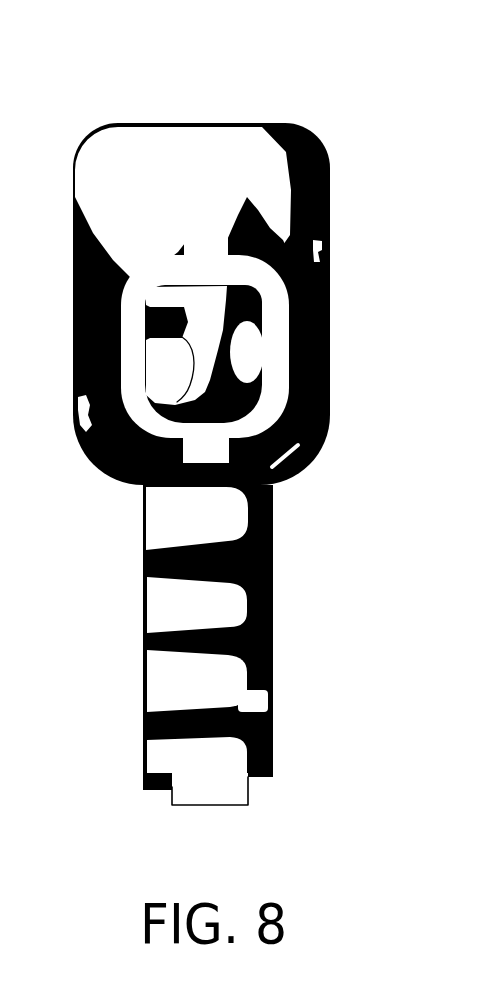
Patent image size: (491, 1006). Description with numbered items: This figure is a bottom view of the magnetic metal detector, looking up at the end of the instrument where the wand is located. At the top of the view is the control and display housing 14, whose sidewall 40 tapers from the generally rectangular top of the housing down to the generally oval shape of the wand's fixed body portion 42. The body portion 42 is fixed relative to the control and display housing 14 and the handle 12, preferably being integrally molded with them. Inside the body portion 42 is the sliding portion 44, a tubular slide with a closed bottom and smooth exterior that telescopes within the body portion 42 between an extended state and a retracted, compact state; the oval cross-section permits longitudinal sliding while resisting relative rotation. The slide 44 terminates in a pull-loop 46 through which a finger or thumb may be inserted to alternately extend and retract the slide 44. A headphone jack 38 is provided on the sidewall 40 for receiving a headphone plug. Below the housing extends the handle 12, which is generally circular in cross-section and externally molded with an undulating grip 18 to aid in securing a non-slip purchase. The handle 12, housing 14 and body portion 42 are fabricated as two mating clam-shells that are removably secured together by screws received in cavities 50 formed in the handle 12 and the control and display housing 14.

The handle 12 is at (134, 688).
The control and display housing 14 is at (276, 106).
The undulating grip 18 is at (220, 617).
The headphone jack 38 is at (78, 416).
The sidewall 40 is at (103, 232).
The body portion 42 is at (272, 322).
The sliding portion 44 is at (243, 360).
The pull-loop 46 is at (193, 347).
The cavities 50 is at (330, 250).